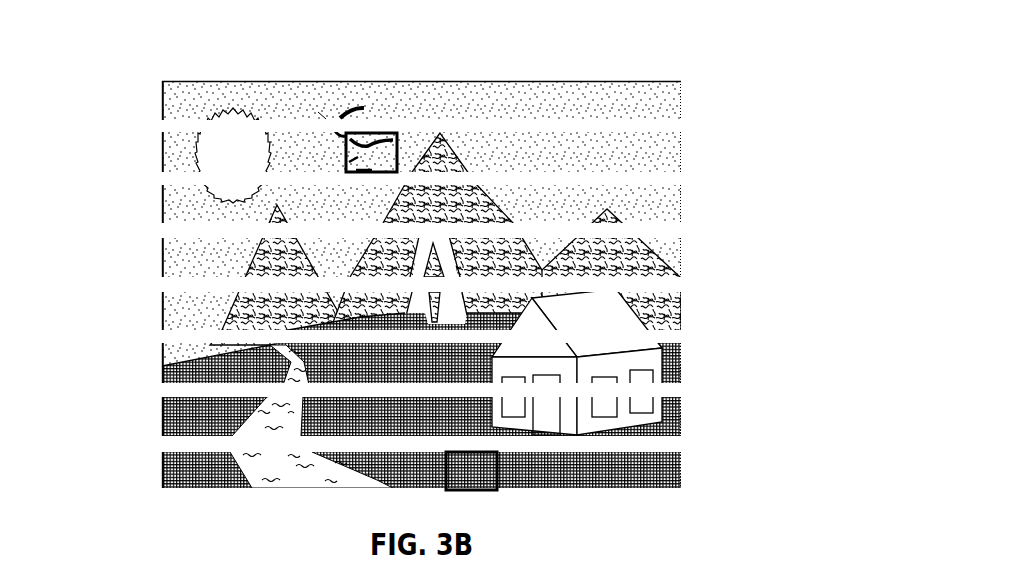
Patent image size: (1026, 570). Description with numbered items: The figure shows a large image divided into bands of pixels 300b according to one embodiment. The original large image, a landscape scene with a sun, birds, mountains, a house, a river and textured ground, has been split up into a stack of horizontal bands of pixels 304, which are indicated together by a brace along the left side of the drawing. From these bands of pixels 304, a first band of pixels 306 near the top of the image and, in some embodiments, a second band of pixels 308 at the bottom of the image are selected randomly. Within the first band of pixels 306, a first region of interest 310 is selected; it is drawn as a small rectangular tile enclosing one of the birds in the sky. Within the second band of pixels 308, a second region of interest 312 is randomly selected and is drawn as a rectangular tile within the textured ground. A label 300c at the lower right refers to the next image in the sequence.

The large image divided into bands of pixels 300b is at (800, 55).
The bands of pixels 304 is at (140, 82).
The first band of pixels 306 is at (675, 153).
The second band of pixels 308 is at (680, 470).
The first region of interest 310 is at (378, 133).
The second region of interest 312 is at (480, 493).
The image 300c is at (826, 569).